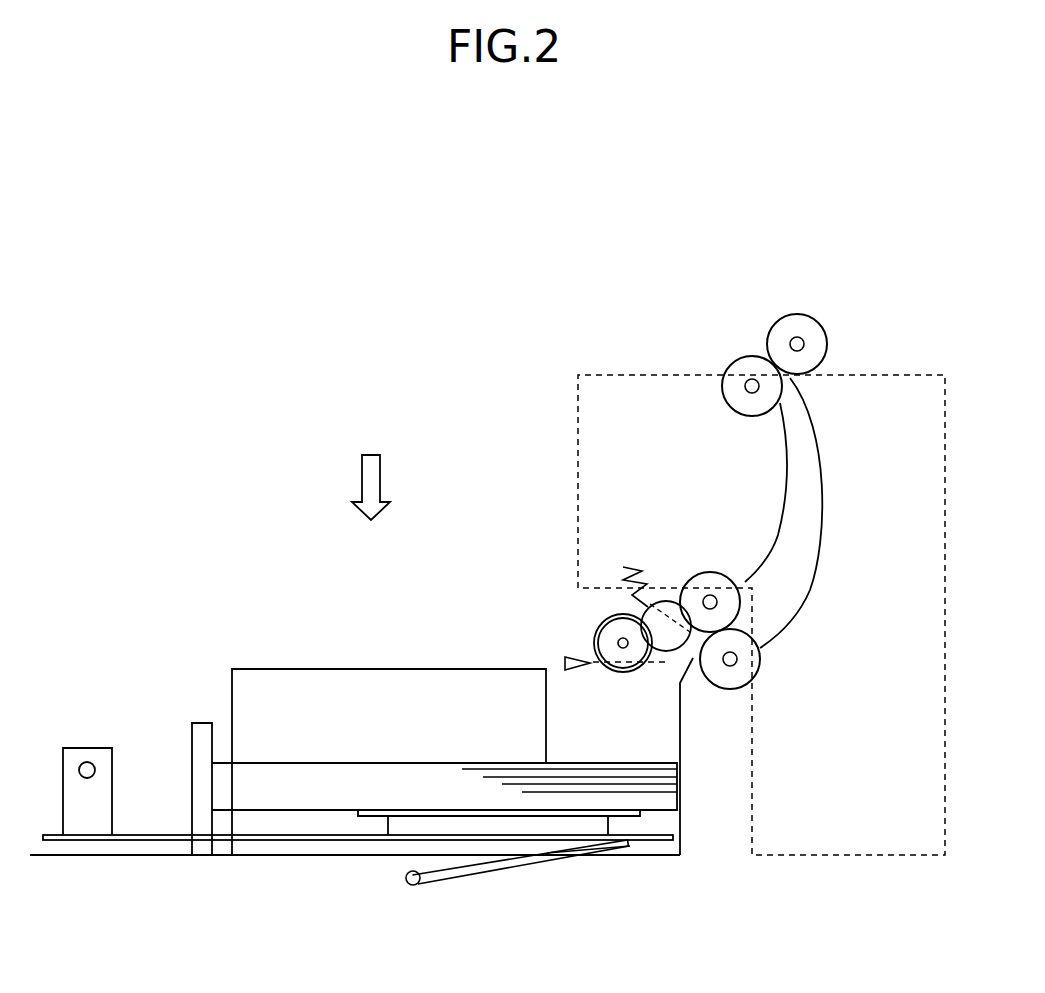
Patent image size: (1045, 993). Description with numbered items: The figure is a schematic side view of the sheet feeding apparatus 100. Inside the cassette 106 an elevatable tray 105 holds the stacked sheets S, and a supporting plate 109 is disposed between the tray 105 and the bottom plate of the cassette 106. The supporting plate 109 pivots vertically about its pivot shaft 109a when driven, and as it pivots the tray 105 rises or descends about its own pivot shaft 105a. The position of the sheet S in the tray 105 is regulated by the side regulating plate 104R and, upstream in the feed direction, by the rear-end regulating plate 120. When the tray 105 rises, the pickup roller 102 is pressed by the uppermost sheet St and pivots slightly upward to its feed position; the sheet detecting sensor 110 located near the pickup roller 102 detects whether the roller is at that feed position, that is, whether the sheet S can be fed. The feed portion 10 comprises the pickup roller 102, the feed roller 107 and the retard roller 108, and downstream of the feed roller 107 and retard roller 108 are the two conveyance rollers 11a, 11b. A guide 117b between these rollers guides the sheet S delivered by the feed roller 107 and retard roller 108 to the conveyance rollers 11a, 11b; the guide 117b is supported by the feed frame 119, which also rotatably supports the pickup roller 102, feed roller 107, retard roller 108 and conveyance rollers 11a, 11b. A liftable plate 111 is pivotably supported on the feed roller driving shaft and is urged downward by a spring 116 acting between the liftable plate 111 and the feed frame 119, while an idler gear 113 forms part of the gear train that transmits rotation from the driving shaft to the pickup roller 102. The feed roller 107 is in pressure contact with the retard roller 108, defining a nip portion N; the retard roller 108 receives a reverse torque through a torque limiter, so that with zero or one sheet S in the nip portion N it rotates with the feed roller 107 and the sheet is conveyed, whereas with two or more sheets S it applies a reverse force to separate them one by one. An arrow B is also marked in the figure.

The feed portion 10 is at (872, 363).
The conveyance roller 11a is at (745, 365).
The conveyance roller 11b is at (792, 320).
The sheet feeding apparatus 100 is at (292, 540).
The pickup roller 102 is at (605, 637).
The side regulating plate 104R is at (302, 673).
The tray 105 is at (147, 841).
The pivot shaft 105a is at (87, 763).
The cassette 106 is at (280, 856).
The feed roller 107 is at (707, 575).
The retard roller 108 is at (757, 663).
The supporting plate 109 is at (477, 873).
The pivot shaft 109a is at (412, 887).
The sheet detecting sensor 110 is at (577, 655).
The liftable plate 111 is at (653, 605).
The idler gear 113 is at (678, 653).
The spring 116 is at (623, 567).
The guide 117b is at (822, 502).
The feed frame 119 is at (633, 373).
The rear-end regulating plate 120 is at (205, 727).
The nip portion N is at (740, 632).
The sheet S is at (597, 767).
The uppermost sheet St is at (492, 762).
The direction B is at (377, 487).